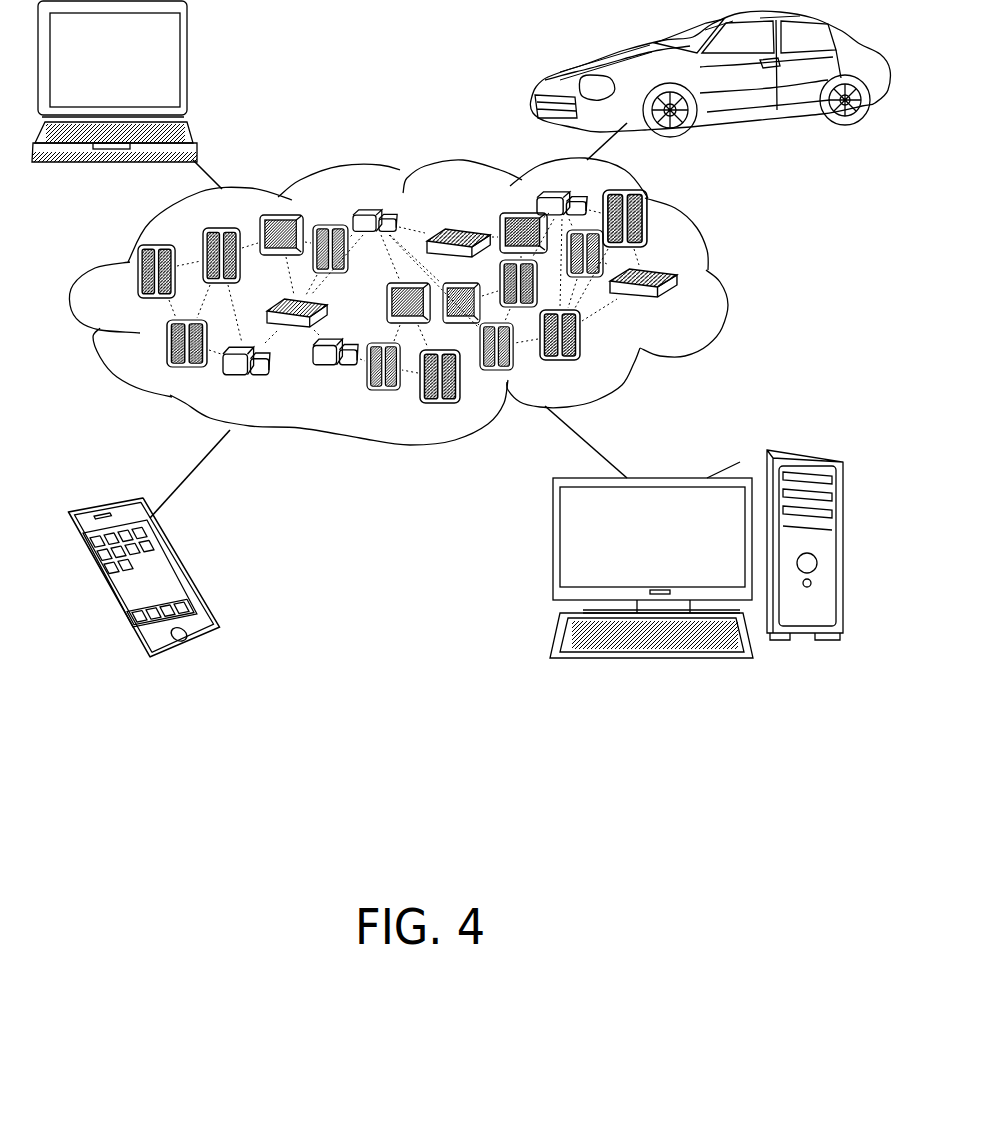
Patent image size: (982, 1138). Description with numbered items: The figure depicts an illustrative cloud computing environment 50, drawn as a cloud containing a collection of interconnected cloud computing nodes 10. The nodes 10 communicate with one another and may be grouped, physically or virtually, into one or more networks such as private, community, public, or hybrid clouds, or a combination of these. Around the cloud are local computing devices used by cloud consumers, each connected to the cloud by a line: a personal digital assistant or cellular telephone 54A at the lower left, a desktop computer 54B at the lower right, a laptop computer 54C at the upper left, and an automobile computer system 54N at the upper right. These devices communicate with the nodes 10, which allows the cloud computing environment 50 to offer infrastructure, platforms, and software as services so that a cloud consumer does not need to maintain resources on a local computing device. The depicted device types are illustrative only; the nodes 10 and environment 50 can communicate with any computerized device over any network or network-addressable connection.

The laptop computer 54C is at (170, 76).
The automobile computer system 54N is at (538, 83).
The cloud computing environment 50 is at (426, 301).
The cloud computing node 10 is at (676, 298).
The personal digital assistant or cellular telephone 54A is at (163, 567).
The desktop computer 54B is at (740, 461).